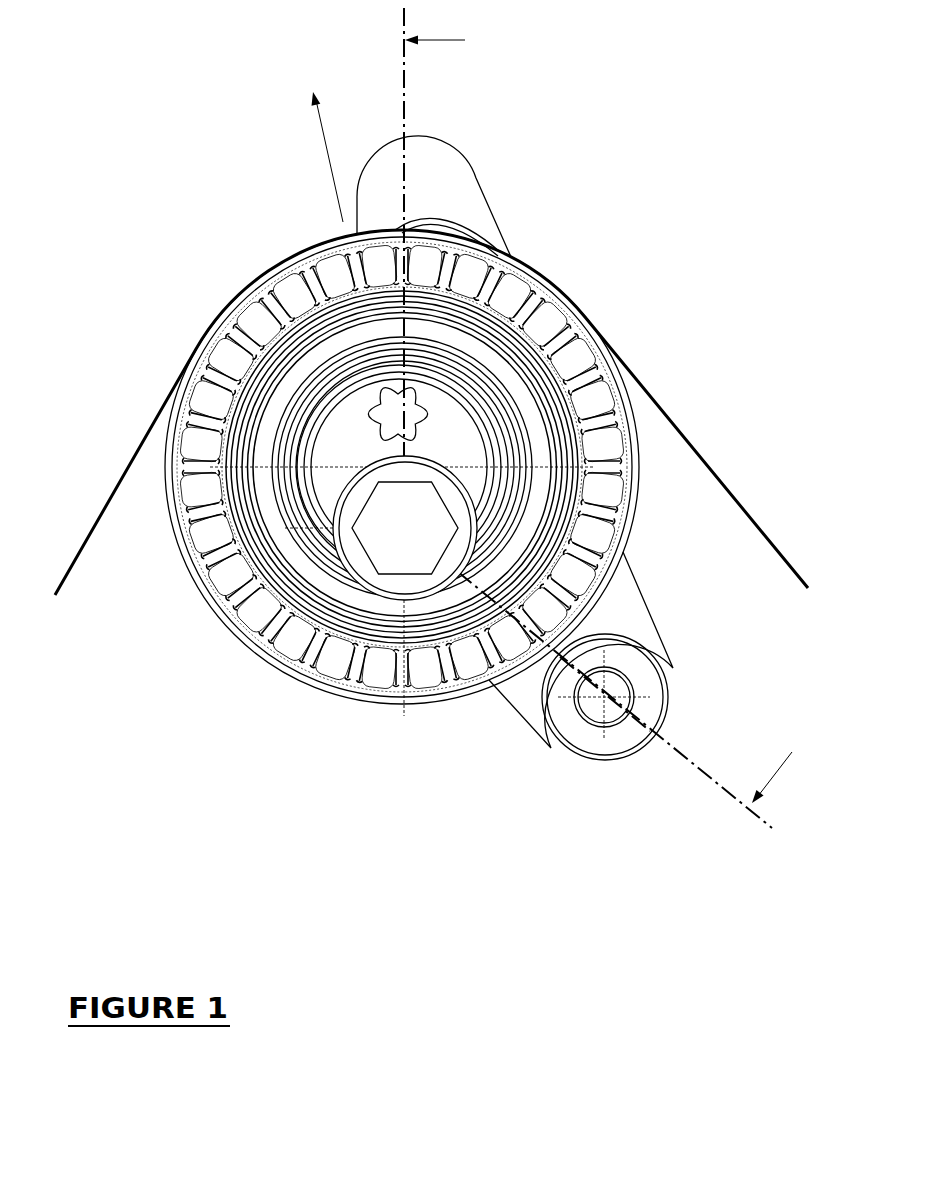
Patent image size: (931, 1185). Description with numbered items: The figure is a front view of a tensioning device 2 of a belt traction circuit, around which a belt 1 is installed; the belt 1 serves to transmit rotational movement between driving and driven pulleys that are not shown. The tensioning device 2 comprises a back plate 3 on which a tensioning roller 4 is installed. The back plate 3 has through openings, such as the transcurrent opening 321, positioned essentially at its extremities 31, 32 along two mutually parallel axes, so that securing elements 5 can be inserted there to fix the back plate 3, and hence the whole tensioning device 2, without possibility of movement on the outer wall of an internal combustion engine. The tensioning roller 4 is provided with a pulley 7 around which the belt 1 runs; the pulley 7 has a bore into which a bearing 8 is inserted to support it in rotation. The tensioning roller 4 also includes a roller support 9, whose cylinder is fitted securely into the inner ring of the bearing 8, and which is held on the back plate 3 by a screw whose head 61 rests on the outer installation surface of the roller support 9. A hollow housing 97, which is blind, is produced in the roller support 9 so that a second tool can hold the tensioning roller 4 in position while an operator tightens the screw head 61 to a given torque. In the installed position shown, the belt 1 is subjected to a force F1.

The belt 1 is at (660, 407).
The tensioning device 2 is at (666, 172).
The back plate 3 is at (522, 211).
The extremity 31 is at (443, 155).
The extremity 32 is at (588, 771).
The transcurrent opening 321 is at (655, 742).
The tensioning roller 4 is at (236, 251).
The securing element 5 is at (617, 686).
The head of the screw 61 is at (375, 572).
The pulley 7 is at (383, 695).
The bearing 8 is at (320, 558).
The roller support 9 is at (333, 470).
The hollow housing 97 is at (423, 400).
The force F1 is at (310, 156).